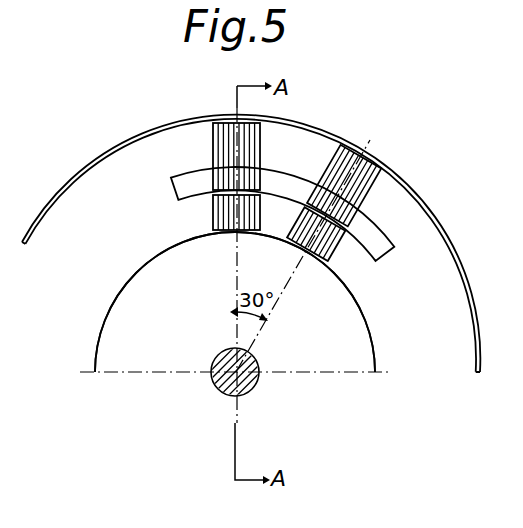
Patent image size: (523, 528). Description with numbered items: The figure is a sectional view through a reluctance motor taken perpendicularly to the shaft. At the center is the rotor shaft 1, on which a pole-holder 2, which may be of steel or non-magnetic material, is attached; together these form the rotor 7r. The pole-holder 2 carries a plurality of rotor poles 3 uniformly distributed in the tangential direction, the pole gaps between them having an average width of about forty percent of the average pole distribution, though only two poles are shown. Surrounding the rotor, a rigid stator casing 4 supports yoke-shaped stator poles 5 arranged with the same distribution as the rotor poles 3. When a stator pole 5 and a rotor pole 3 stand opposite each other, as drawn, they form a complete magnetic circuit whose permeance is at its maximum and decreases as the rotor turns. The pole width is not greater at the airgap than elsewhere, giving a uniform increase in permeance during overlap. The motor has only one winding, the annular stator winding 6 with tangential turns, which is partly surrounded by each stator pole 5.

The rotor shaft 1 is at (252, 384).
The pole-holder 2 is at (353, 340).
The rotor pole 3 is at (214, 214).
The stator casing 4 is at (328, 137).
The stator pole 5 is at (215, 146).
The stator winding 6 is at (382, 240).
The rotor 7r is at (133, 296).